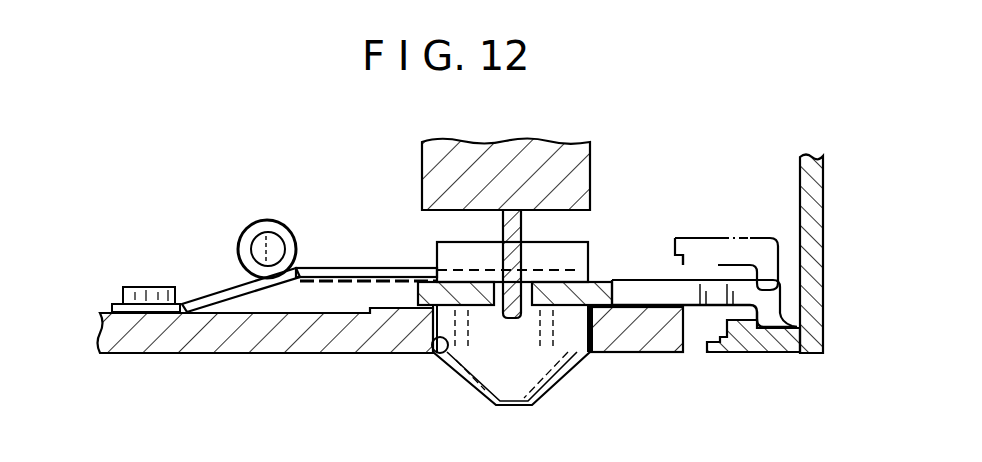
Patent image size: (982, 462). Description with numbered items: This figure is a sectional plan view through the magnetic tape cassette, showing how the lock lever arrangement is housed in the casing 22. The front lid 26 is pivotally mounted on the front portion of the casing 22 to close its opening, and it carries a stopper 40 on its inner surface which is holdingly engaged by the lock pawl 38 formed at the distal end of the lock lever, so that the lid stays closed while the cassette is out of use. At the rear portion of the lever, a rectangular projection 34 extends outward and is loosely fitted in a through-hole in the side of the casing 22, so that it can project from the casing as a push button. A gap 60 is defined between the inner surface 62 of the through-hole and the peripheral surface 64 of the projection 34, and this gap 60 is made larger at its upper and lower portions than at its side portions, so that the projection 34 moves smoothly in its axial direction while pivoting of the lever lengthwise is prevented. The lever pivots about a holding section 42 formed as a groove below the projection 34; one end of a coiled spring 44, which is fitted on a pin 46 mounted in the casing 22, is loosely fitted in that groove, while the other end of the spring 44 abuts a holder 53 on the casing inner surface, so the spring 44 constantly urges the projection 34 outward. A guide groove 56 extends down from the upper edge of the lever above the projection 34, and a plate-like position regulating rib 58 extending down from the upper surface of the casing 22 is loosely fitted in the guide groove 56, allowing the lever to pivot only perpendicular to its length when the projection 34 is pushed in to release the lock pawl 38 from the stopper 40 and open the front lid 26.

The casing 22 is at (186, 355).
The front lid 26 is at (823, 246).
The projection 34 is at (551, 387).
The lock pawl 38 is at (760, 323).
The stopper 40 is at (737, 353).
The holding section 42 is at (573, 258).
The spring 44 is at (337, 270).
The pin 46 is at (268, 237).
The holder 53 is at (148, 287).
The guide groove 56 is at (495, 277).
The position regulating rib 58 is at (522, 224).
The gap 60 is at (588, 352).
The inner surface 62 is at (447, 353).
The peripheral surface 64 is at (432, 321).